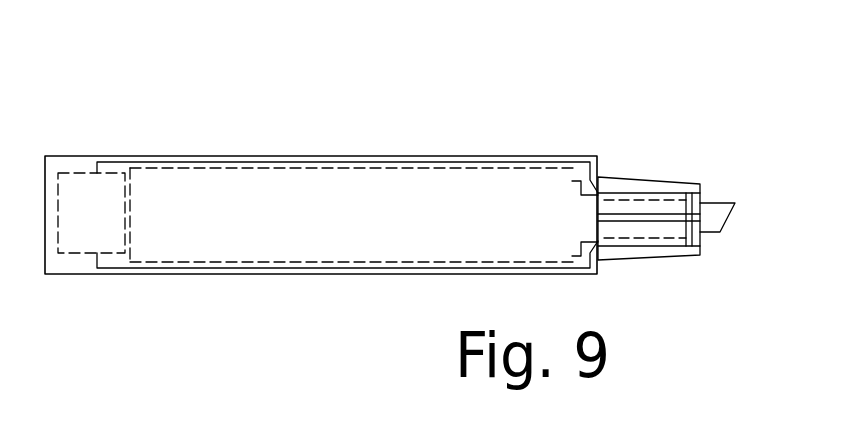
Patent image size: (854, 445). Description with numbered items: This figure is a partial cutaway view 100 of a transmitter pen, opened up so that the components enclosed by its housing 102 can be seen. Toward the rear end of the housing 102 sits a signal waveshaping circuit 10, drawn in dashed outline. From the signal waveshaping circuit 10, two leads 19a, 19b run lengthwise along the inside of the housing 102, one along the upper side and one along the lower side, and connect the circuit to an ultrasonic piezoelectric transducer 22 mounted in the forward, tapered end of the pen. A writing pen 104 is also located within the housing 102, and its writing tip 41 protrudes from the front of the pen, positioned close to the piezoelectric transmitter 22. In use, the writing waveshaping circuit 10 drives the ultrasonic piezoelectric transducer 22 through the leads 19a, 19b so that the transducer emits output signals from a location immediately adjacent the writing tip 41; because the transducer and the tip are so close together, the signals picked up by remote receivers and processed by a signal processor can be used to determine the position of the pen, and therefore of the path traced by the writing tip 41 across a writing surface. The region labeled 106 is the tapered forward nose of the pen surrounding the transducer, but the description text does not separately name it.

The partial cutaway view 100 is at (607, 105).
The housing 102 is at (350, 157).
The writing pen 104 is at (402, 252).
The nozzle portion 106 is at (652, 258).
The signal waveshaping circuit 10 is at (67, 173).
The lead 19a is at (163, 162).
The lead 19b is at (172, 268).
The ultrasonic piezoelectric transducer 22 is at (648, 200).
The writing tip 41 is at (730, 232).